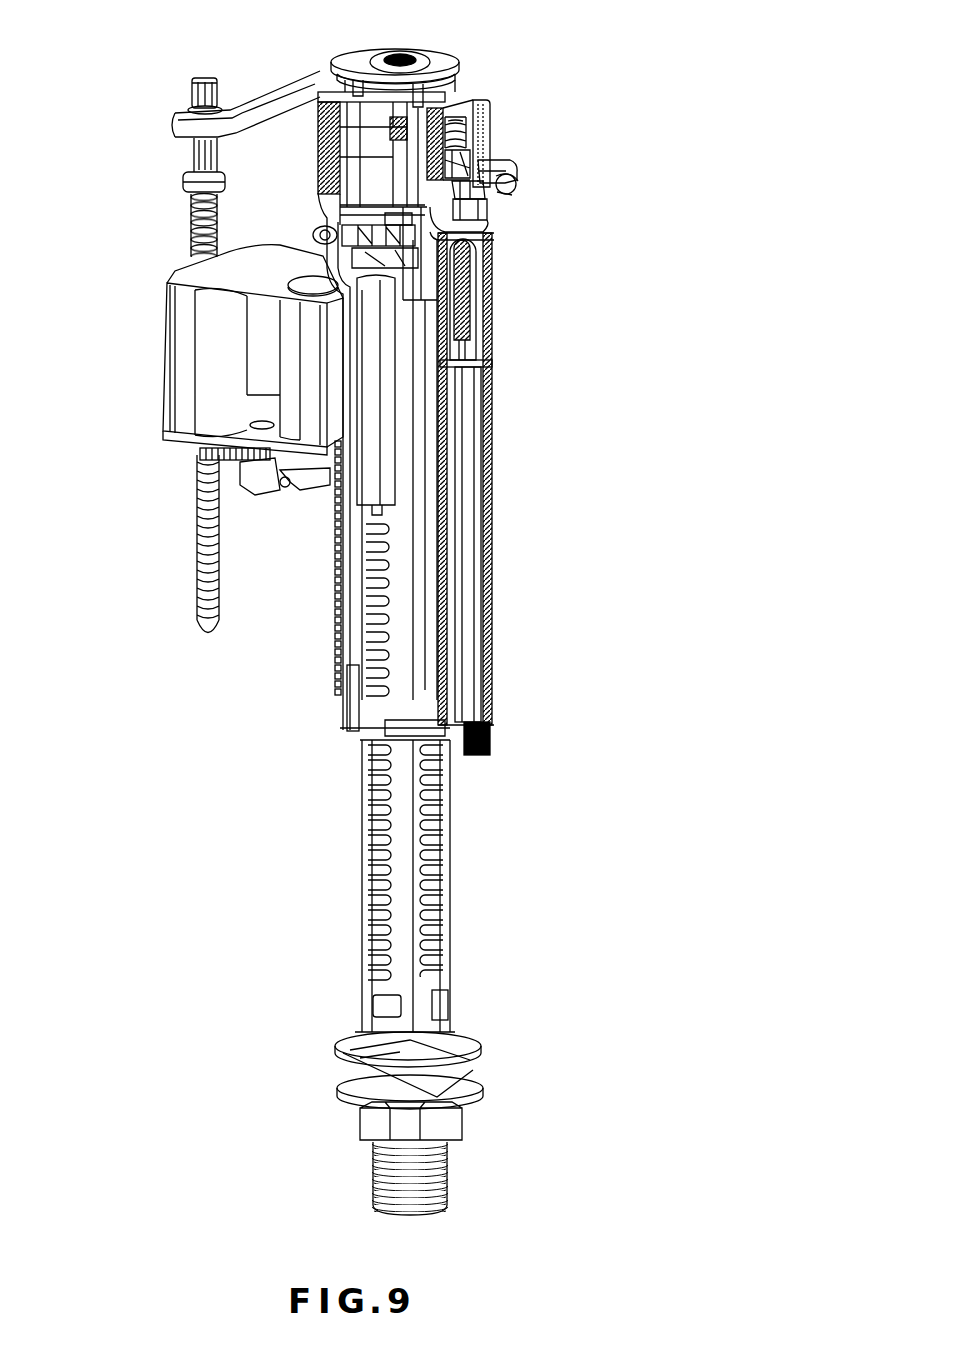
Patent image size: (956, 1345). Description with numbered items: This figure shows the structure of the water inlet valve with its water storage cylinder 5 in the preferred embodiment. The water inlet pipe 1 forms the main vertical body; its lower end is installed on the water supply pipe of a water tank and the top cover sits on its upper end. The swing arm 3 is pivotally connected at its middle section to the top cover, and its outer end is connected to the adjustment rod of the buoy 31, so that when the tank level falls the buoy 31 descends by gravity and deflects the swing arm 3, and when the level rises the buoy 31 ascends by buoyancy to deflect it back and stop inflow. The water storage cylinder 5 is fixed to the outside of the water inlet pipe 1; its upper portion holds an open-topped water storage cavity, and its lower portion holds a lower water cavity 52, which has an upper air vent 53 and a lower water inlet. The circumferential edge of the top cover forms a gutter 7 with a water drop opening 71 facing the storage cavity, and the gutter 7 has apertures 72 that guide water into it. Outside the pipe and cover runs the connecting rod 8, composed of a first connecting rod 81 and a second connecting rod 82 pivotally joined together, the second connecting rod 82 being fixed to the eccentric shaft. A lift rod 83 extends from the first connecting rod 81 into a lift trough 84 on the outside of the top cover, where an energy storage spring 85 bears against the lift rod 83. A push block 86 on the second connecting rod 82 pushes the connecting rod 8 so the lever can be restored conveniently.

The water inlet pipe 1 is at (403, 852).
The swing arm 3 is at (262, 107).
The water storage cylinder 5 is at (490, 467).
The gutter 7 is at (470, 72).
The connecting rod 8 is at (578, 200).
The buoy 31 is at (180, 345).
The lower water cavity 52 is at (467, 626).
The upper air vent 53 is at (470, 298).
The water drop opening 71 is at (498, 173).
The apertures 72 is at (428, 68).
The first connecting rod 81 is at (485, 215).
The second connecting rod 82 is at (483, 195).
The lift rod 83 is at (485, 150).
The lift trough 84 is at (480, 130).
The energy storage spring 85 is at (463, 112).
The push block 86 is at (517, 180).